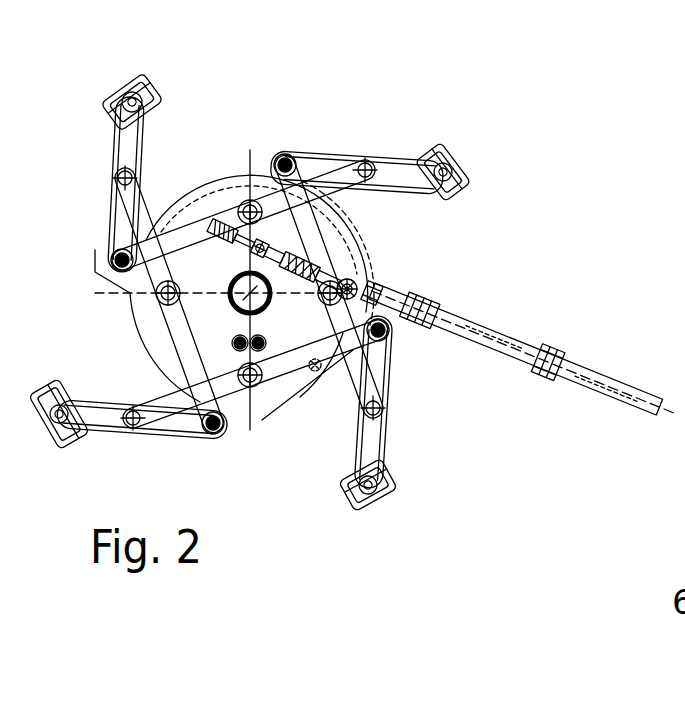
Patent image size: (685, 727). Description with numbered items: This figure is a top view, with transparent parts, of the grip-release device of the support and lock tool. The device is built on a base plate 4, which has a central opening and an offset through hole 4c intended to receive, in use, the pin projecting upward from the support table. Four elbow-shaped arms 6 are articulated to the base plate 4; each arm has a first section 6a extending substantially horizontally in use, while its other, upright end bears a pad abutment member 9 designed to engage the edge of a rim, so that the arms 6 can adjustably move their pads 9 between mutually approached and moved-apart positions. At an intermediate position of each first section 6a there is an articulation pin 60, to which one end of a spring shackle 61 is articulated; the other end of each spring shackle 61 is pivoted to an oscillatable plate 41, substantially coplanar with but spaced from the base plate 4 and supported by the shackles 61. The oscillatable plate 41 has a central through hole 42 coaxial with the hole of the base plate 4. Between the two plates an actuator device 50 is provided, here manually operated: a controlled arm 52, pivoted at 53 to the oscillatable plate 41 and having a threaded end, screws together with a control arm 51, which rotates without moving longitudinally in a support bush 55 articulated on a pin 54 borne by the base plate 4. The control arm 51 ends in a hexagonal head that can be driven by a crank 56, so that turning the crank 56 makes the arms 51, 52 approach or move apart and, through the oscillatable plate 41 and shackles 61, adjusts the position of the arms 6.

The base plate 4 is at (125, 295).
The oscillatable plate 41 is at (230, 320).
The central through hole 42 is at (228, 312).
The through hole 4c is at (315, 363).
The elbow-shaped arm 6 is at (143, 166).
The first section 6a is at (108, 158).
The pad abutment member 9 is at (472, 180).
The actuator device 50 is at (410, 330).
The control arm 51 is at (395, 285).
The controlled arm 52 is at (223, 200).
The pivot 53 is at (322, 257).
The pin 54 is at (362, 282).
The support bush 55 is at (385, 290).
The crank 56 is at (510, 345).
The articulation pin 60 is at (363, 163).
The spring shackle 61 is at (285, 155).